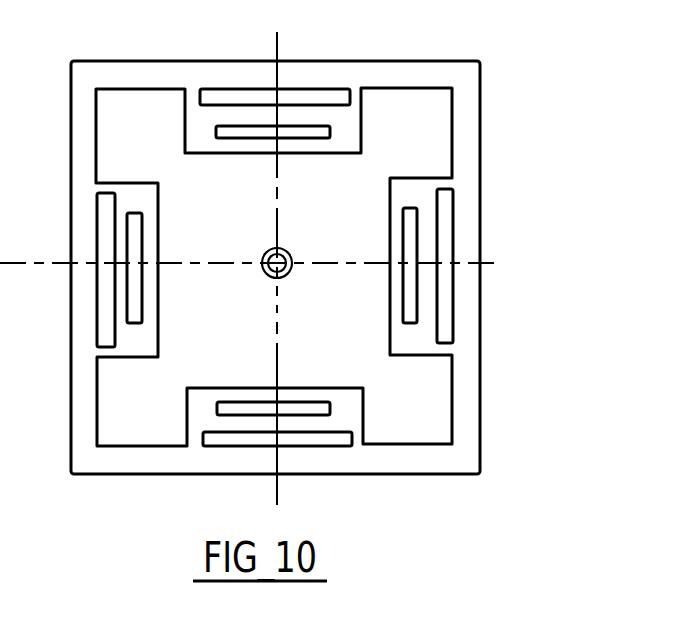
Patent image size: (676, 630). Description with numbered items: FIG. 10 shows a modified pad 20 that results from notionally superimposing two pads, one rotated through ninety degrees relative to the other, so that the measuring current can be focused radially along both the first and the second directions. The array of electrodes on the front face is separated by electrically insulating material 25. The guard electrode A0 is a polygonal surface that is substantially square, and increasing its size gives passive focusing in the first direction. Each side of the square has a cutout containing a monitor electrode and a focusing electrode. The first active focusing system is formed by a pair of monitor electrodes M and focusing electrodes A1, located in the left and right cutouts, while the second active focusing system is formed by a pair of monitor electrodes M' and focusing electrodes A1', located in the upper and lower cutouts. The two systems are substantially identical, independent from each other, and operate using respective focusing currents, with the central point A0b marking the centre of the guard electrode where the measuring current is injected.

The sensor structure 20 is at (494, 96).
The electrically insulating material 25 is at (405, 72).
The focusing electrodes A1 is at (275, 268).
The focusing electrodes A1' is at (276, 265).
The monitor electrodes M is at (271, 281).
The monitor electrodes M' is at (258, 269).
The guard electrode A0 is at (200, 329).
The central pivot A0b is at (280, 249).